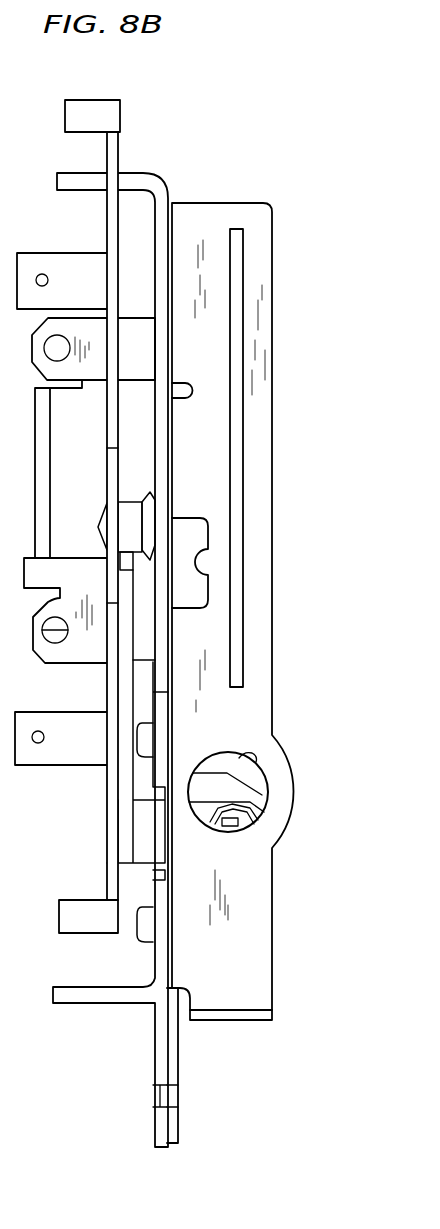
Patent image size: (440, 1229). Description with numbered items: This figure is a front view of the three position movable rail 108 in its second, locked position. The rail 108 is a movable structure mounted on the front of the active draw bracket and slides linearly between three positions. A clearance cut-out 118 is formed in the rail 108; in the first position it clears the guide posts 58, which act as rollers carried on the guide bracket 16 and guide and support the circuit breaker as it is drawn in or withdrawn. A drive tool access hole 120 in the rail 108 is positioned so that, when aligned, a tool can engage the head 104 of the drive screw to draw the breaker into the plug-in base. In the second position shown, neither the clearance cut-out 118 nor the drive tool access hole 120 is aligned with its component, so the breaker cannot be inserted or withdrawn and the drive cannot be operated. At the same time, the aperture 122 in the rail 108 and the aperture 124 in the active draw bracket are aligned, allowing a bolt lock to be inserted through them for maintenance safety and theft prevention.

The guide bracket 16 is at (118, 428).
The guide post 58 is at (163, 511).
The clearance cut-out 118 is at (200, 573).
The rail 108 is at (272, 677).
The drive tool access hole 120 is at (260, 762).
The head 104 is at (255, 820).
The aperture 122 is at (178, 1100).
The aperture 124 is at (155, 1105).